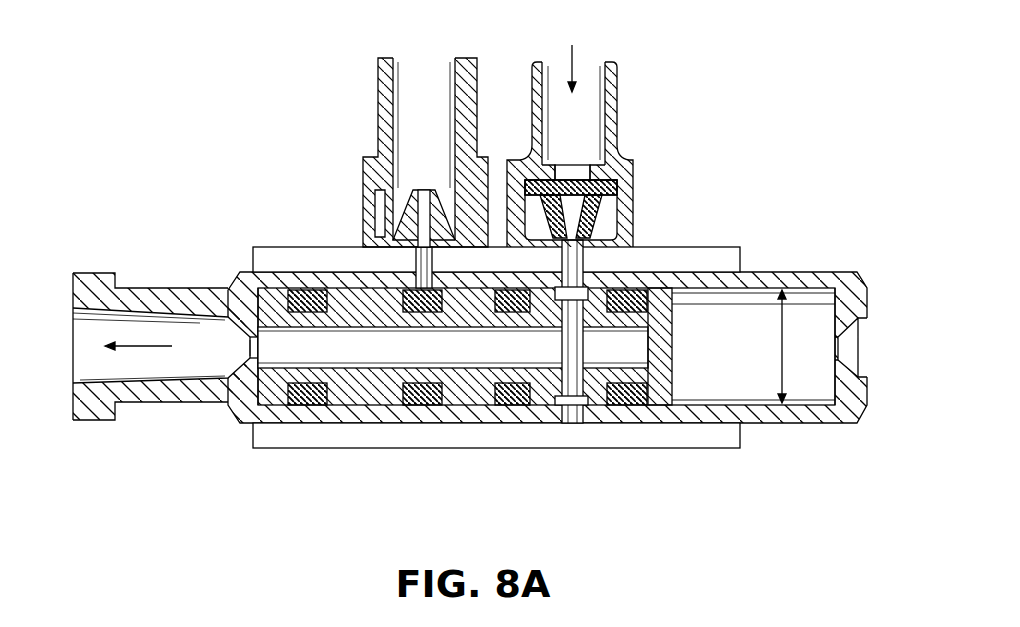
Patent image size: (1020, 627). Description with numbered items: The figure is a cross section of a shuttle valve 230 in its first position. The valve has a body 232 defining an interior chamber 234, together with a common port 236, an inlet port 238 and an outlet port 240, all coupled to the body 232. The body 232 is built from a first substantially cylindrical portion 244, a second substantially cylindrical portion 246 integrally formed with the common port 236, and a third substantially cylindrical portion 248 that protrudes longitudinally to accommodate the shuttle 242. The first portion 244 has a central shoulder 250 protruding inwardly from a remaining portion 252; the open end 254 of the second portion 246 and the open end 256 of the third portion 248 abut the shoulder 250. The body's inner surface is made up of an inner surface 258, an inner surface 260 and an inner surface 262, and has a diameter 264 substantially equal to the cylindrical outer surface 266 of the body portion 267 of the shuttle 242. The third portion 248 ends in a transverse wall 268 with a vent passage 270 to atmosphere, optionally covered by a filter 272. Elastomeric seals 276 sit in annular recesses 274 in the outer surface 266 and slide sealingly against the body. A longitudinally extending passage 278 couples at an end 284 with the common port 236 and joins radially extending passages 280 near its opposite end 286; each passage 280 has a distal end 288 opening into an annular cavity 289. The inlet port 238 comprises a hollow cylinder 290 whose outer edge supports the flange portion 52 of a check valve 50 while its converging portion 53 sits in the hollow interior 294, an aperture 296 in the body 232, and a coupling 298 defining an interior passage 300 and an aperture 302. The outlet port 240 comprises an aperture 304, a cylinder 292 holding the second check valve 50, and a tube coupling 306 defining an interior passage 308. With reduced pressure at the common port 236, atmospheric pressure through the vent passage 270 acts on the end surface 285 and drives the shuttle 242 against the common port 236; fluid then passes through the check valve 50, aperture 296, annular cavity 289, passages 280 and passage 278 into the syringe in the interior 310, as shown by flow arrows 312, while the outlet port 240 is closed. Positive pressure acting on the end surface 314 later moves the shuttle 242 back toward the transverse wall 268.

The shuttle valve 230 is at (706, 50).
The body 232 is at (643, 452).
The interior chamber 234 is at (760, 384).
The common port 236 is at (131, 288).
The inlet port 238 is at (620, 92).
The outlet port 240 is at (378, 118).
The shuttle 242 is at (267, 282).
The first substantially cylindrical portion 244 is at (705, 247).
The second substantially cylindrical portion 246 is at (265, 425).
The third substantially cylindrical portion 248 is at (748, 272).
The shoulder 250 is at (466, 412).
The remaining portion 252 is at (712, 448).
The open end 254 is at (447, 405).
The open end 256 is at (558, 420).
The inner surface 258 is at (348, 290).
The inner surface 260 is at (482, 425).
The inner surface 262 is at (758, 408).
The diameter 264 is at (784, 305).
The outer surface 266 is at (370, 412).
The body portion 267 is at (238, 287).
The transverse wall 268 is at (858, 424).
The vent passage 270 is at (850, 368).
The filter 272 is at (858, 348).
The annular recesses 274 is at (302, 400).
The elastomeric seals 276 is at (620, 385).
The longitudinally extending passage 278 is at (240, 405).
The radially extending passages 280 is at (578, 320).
The end 284 is at (250, 352).
The end surface 285 is at (682, 405).
The opposite end 286 is at (662, 348).
The distal end 288 is at (568, 277).
The annular cavity 289 is at (553, 402).
The hollow cylinder 290 is at (635, 212).
The cylinder 292 is at (377, 195).
The hollow interior 294 is at (522, 210).
The aperture 296 is at (630, 238).
The coupling 298 is at (532, 80).
The interior passage 300 is at (598, 54).
The aperture 302 is at (580, 165).
The aperture 304 is at (377, 243).
The tube coupling 306 is at (378, 75).
The interior passage 308 is at (424, 77).
The interior 310 is at (115, 385).
The flow arrows 312 is at (145, 348).
The end surface 314 is at (250, 339).
The check valve 50 is at (408, 190).
The flange portion 52 is at (615, 182).
The converging portion 53 is at (610, 215).